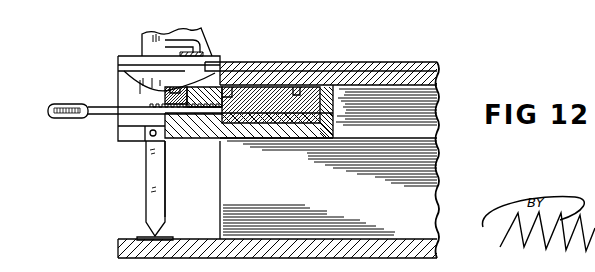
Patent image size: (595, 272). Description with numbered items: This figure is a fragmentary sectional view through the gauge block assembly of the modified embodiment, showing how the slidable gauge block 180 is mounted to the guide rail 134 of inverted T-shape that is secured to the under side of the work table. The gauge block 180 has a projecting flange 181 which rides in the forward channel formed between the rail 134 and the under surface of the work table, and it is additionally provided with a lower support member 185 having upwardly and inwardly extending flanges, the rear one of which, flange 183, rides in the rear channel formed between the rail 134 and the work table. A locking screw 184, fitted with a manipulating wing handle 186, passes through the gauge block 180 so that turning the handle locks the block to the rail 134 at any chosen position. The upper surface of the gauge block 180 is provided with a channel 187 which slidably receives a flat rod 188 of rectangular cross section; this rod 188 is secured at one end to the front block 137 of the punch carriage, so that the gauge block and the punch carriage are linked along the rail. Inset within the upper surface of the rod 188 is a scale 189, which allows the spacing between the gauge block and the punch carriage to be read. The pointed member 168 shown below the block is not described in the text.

The front block 137 is at (128, 101).
The gauge block 180 is at (124, 66).
The flange 183 is at (326, 84).
The guide rail 134 is at (300, 84).
The wing handle 186 is at (64, 119).
The locking screw 184 is at (107, 115).
The lower support member 185 is at (210, 118).
The probe stem 168 is at (152, 187).
The scale 189 is at (183, 112).
The rod 188 is at (230, 90).
The channel 187 is at (184, 110).
The projecting flange 181 is at (268, 92).